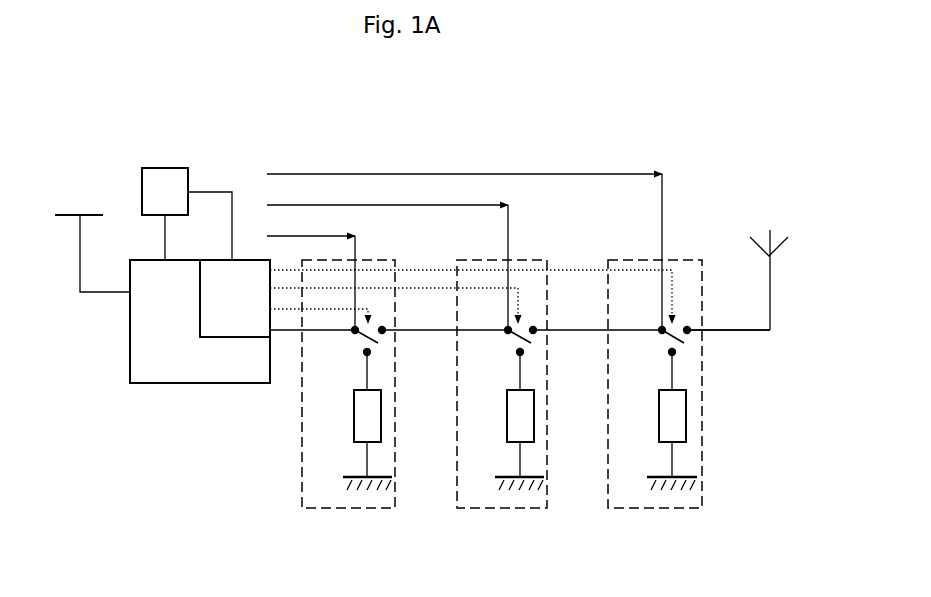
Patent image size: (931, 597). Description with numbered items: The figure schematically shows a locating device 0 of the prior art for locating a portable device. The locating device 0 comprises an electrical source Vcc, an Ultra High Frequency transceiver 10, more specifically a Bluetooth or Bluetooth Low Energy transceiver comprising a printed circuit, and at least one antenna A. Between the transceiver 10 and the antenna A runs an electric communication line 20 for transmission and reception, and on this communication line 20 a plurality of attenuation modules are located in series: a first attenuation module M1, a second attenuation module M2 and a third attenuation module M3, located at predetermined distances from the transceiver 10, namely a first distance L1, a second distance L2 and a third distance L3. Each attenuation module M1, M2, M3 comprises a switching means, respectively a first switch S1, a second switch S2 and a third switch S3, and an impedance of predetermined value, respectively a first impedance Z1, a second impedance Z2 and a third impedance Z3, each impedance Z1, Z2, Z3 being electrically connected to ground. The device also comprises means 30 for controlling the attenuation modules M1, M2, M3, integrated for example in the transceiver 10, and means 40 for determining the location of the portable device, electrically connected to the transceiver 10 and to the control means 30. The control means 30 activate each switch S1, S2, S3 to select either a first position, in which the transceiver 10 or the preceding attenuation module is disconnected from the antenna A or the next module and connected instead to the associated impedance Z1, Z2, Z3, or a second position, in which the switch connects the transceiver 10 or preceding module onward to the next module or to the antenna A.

The radio frequency device 0 is at (196, 134).
The transceiver 10 is at (200, 321).
The electric communication line 20 is at (777, 331).
The means for controlling the attenuation module 30 is at (235, 298).
The means for determining the location of the portable device 40 is at (187, 214).
The antenna A is at (801, 229).
The electrical source Vcc is at (79, 253).
The first distance L1 is at (311, 271).
The second distance L2 is at (387, 255).
The third distance L3 is at (464, 239).
The first switch S1 is at (353, 346).
The second switch S2 is at (506, 346).
The third switch S3 is at (659, 346).
The first impedance Z1 is at (350, 414).
The second impedance Z2 is at (503, 414).
The third impedance Z3 is at (656, 414).
The first attenuation module M1 is at (348, 415).
The second attenuation module M2 is at (502, 415).
The third attenuation module M3 is at (655, 415).